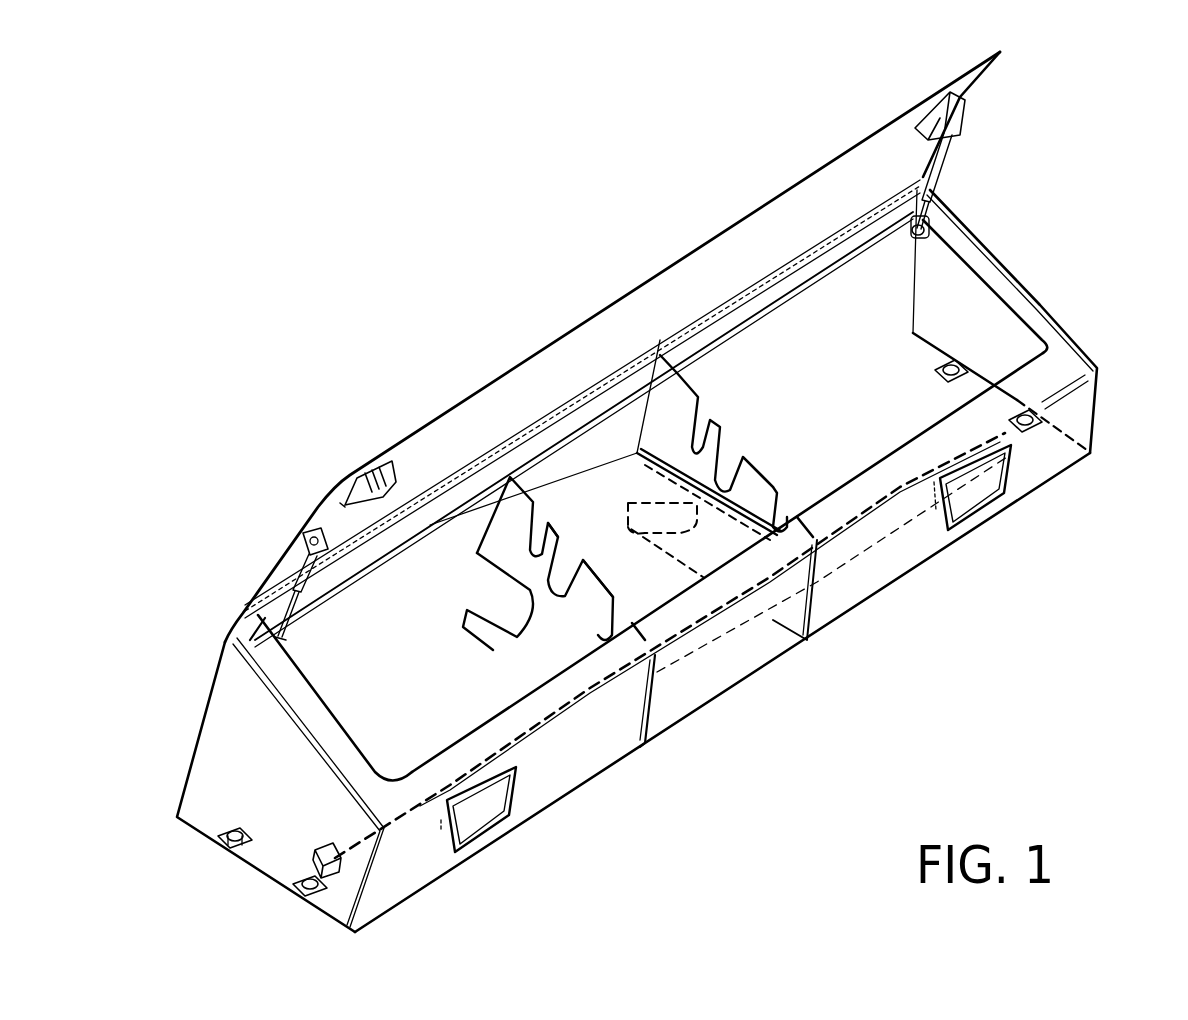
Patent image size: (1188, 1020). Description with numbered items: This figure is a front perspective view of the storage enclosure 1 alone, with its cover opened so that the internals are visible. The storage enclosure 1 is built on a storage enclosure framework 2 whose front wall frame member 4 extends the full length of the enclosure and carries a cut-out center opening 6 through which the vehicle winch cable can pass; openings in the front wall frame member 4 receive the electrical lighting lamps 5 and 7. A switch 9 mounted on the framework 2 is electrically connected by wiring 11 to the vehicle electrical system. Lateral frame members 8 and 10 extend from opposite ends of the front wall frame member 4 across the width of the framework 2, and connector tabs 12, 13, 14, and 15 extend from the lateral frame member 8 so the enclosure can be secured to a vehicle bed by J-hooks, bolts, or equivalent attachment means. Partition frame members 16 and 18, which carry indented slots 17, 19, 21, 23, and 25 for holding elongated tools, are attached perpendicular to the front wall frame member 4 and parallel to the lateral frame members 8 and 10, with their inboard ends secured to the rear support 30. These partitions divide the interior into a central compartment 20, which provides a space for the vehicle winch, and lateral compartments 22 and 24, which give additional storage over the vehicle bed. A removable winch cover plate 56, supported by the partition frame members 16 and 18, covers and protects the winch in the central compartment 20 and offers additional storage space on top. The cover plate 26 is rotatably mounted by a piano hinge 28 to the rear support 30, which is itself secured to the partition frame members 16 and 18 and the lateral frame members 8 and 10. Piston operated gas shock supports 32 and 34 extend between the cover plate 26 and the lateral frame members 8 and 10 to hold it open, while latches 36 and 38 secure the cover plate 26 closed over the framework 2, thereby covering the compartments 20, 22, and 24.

The storage enclosure 1 is at (1004, 198).
The storage enclosure framework 2 is at (1097, 368).
The front wall frame member 4 is at (885, 565).
The electrical lighting lamp 5 is at (508, 808).
The cut-out center opening 6 is at (748, 650).
The electrical lighting lamp 7 is at (1012, 487).
The lateral frame member 8 is at (245, 742).
The switch 9 is at (340, 873).
The lateral frame member 10 is at (955, 310).
The wiring 11 is at (890, 503).
The connector tab 12 is at (238, 850).
The connector tab 13 is at (317, 893).
The connector tab 14 is at (965, 375).
The connector tab 15 is at (1035, 425).
The partition frame member 16 is at (570, 643).
The indented slot 17 is at (537, 518).
The partition frame member 18 is at (673, 400).
The indented slot 19 is at (570, 557).
The central compartment 20 is at (693, 458).
The indented slot 21 is at (497, 595).
The lateral compartment 22 is at (511, 573).
The indented slot 23 is at (730, 453).
The lateral compartment 24 is at (964, 391).
The indented slot 25 is at (783, 518).
The cover plate 26 is at (830, 187).
The piano hinge 28 is at (640, 387).
The rear support 30 is at (260, 615).
The piston operated gas shock support 32 is at (303, 565).
The piston operated gas shock support 34 is at (950, 163).
The latch 36 is at (382, 460).
The latch 38 is at (940, 92).
The removable winch cover plate 56 is at (600, 490).